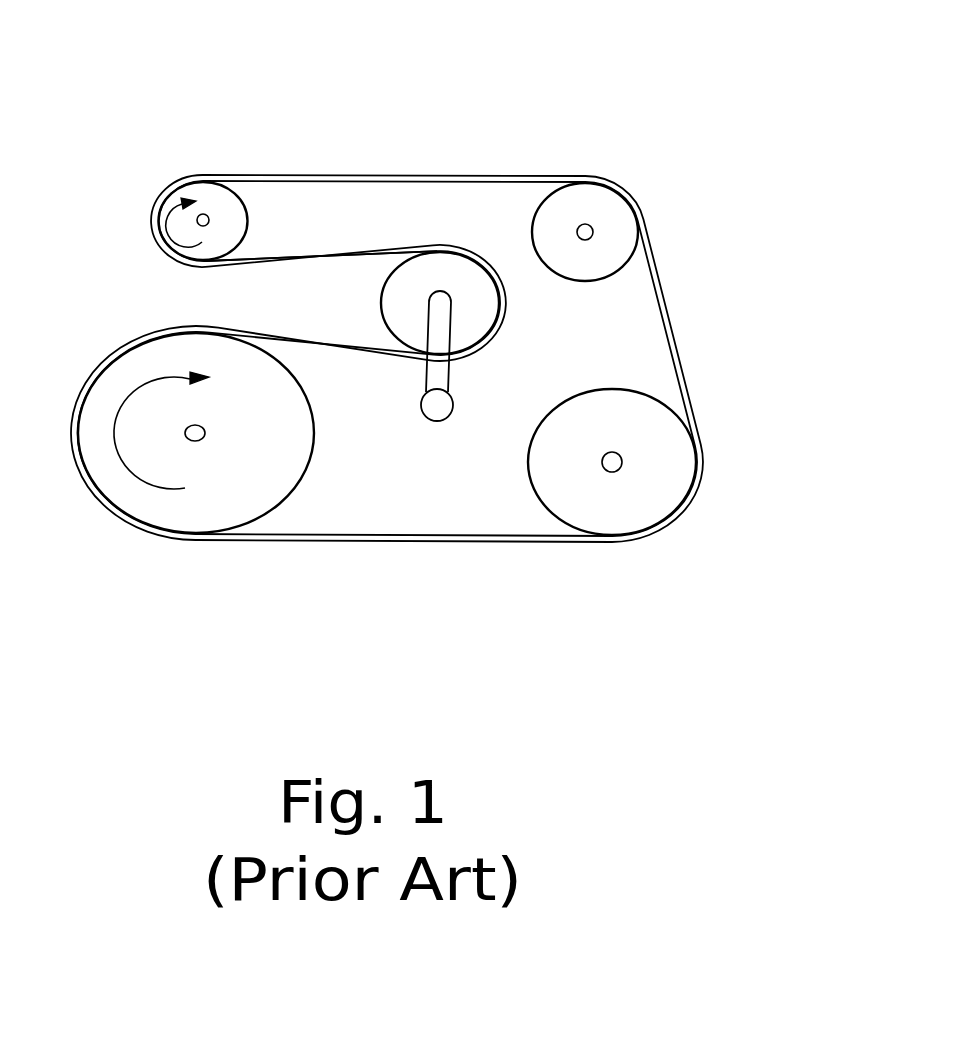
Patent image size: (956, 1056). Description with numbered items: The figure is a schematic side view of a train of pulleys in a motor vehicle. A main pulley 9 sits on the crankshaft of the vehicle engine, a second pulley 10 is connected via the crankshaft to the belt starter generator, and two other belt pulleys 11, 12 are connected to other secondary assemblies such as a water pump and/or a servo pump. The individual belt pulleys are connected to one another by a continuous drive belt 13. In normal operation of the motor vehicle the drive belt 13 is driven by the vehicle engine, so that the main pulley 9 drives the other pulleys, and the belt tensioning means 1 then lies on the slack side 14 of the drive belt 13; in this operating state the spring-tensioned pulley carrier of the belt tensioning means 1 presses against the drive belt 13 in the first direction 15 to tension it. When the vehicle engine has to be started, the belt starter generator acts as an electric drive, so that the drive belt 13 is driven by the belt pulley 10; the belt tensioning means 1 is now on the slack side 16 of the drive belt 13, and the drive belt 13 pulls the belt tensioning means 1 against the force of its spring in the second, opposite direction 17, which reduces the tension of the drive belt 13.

The belt tensioning means 1 is at (473, 224).
The main pulley 9 is at (152, 507).
The second pulley 10 is at (209, 200).
The belt pulley 11 is at (587, 197).
The belt pulley 12 is at (642, 490).
The drive belt 13 is at (667, 303).
The slack side 14 is at (367, 347).
The first direction 15 is at (517, 306).
The slack side 16 is at (340, 253).
The second direction 17 is at (355, 297).